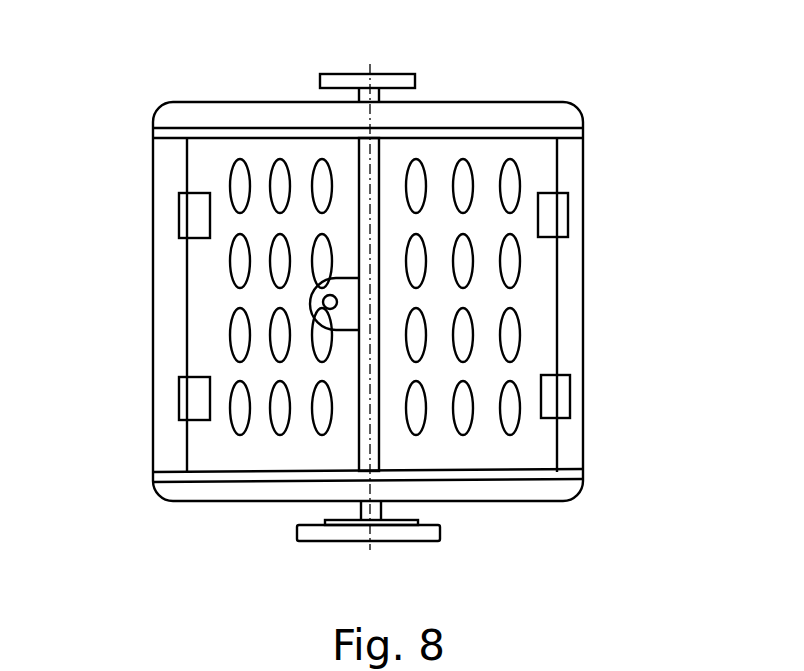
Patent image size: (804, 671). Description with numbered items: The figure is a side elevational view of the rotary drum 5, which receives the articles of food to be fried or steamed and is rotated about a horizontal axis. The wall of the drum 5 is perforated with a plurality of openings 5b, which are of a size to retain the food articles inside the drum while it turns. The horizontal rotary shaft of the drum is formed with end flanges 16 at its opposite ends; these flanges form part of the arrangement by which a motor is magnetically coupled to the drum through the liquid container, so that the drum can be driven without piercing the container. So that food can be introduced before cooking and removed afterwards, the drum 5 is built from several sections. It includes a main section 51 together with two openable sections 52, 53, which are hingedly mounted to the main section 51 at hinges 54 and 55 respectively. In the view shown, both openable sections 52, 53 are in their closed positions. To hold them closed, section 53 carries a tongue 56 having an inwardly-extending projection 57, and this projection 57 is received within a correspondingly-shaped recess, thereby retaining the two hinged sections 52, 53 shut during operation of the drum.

The drum 5 is at (597, 98).
The openings 5b is at (512, 427).
The end flanges 16 is at (402, 72).
The main section 51 is at (165, 342).
The openable section 52 is at (193, 359).
The openable section 53 is at (538, 349).
The hinge 54 is at (180, 215).
The hinge 55 is at (567, 212).
The tongue 56 is at (345, 279).
The inwardly-extending projection 57 is at (322, 302).